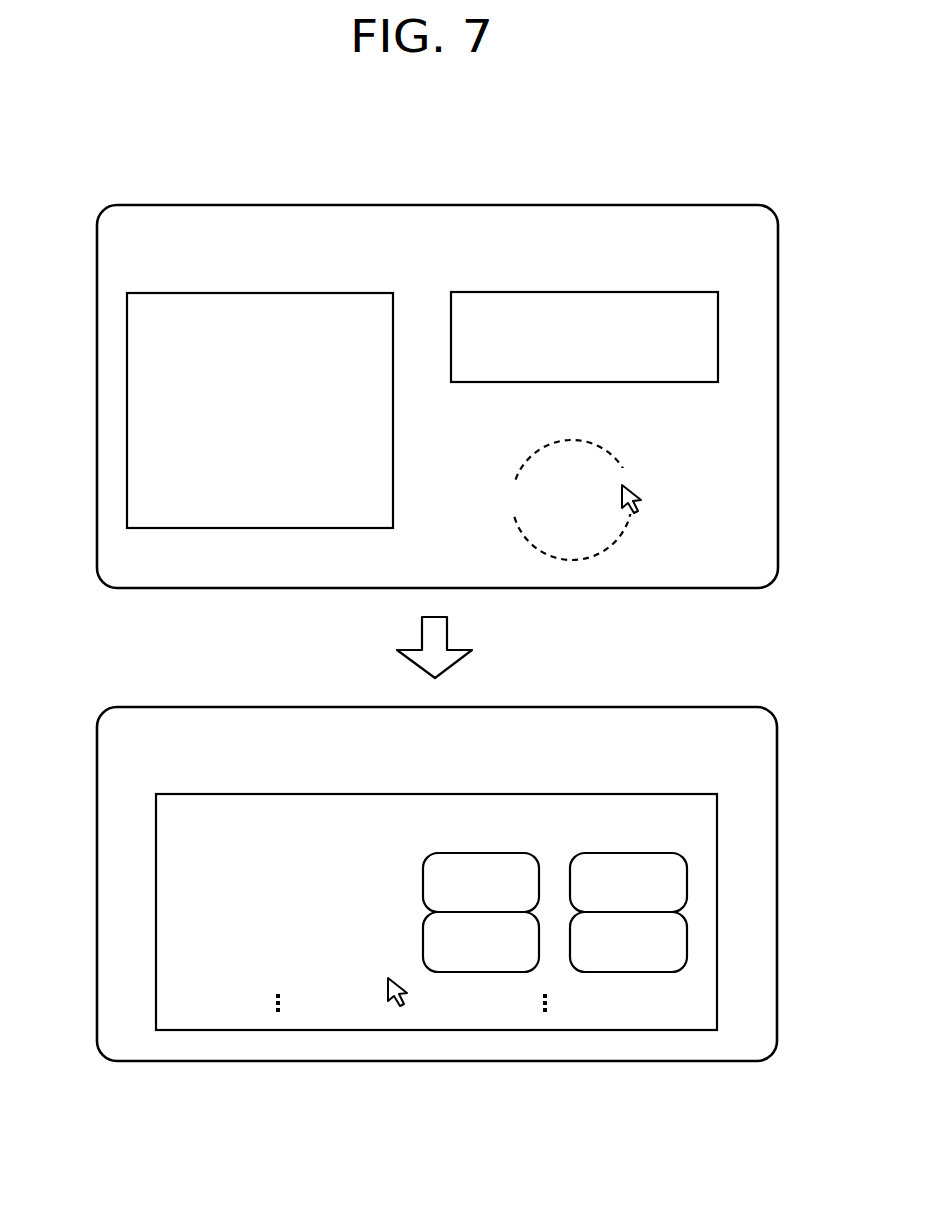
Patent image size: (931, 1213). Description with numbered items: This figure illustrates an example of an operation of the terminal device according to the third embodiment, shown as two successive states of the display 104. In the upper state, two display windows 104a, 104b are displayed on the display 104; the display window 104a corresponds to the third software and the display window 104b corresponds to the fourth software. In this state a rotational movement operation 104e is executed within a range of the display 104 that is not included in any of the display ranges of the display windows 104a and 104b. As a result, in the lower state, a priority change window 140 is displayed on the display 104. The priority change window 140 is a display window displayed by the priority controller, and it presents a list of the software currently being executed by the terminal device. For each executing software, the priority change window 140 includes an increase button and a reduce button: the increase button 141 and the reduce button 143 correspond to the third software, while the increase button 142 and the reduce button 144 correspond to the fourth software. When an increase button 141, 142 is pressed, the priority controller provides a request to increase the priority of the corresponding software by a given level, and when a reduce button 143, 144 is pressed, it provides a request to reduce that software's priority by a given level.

The display 104 is at (567, 205).
The display window 104a is at (333, 293).
The display window 104b is at (657, 292).
The rotational movement operation 104e is at (621, 473).
The priority change window 140 is at (658, 794).
The increase button 141 is at (487, 853).
The increase button 142 is at (489, 973).
The reduce button 143 is at (630, 853).
The reduce button 144 is at (633, 973).